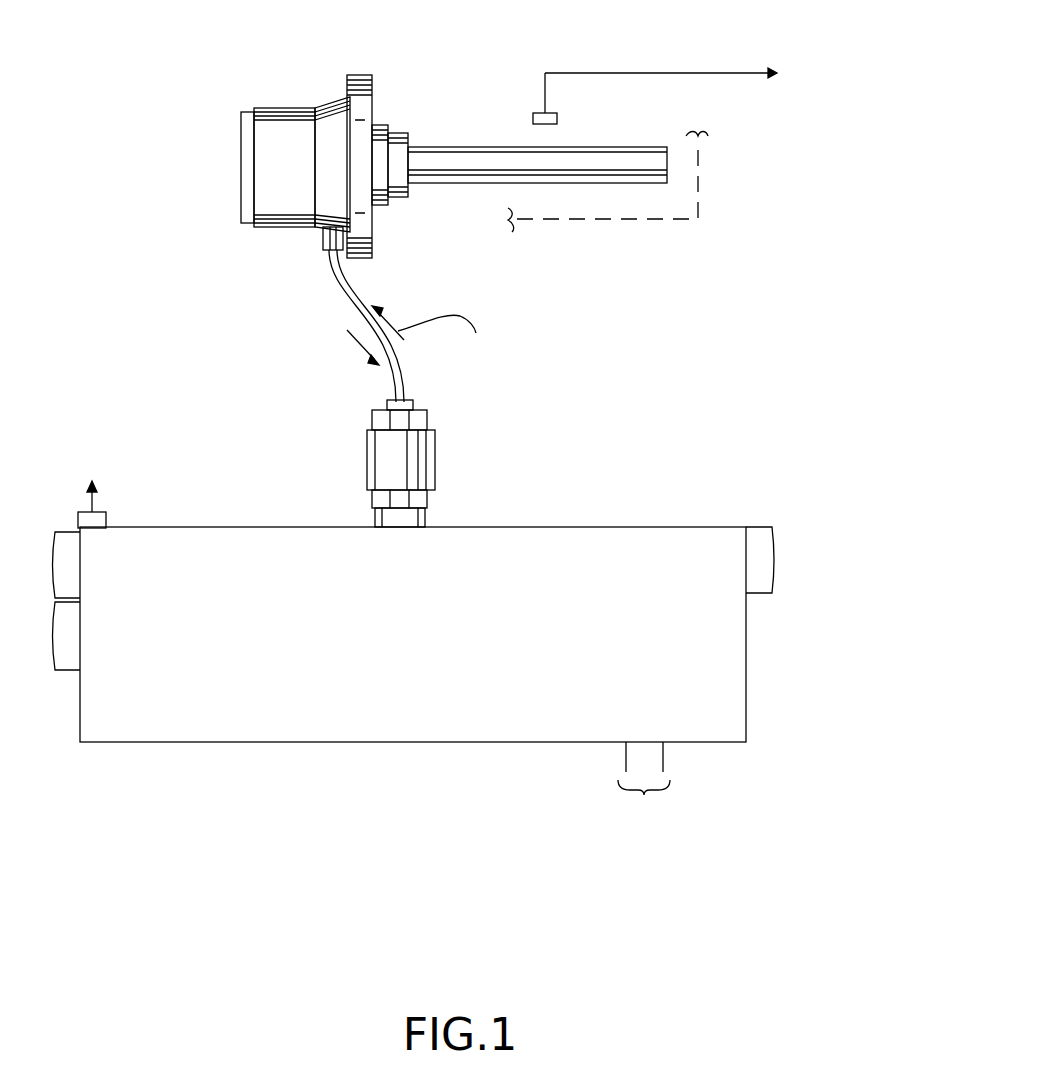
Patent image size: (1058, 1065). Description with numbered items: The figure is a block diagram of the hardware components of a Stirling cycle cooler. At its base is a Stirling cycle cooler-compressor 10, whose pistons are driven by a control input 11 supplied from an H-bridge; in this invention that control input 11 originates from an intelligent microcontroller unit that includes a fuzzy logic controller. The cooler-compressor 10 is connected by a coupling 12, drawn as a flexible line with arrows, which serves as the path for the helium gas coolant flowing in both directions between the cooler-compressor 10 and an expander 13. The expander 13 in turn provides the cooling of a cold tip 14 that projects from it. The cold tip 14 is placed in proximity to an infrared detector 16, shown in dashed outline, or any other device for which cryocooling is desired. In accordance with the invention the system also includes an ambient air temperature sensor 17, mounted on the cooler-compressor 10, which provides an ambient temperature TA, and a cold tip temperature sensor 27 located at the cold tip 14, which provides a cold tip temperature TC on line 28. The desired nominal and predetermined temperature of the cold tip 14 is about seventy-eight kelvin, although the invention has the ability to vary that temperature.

The Stirling cycle cooler-compressor 10 is at (746, 688).
The control input 11 is at (641, 809).
The coupling 12 is at (332, 290).
The expander 13 is at (277, 108).
The cold tip 14 is at (478, 147).
The infrared detector 16 is at (643, 219).
The ambient air temperature sensor 17 is at (78, 518).
The cold tip temperature sensor 27 is at (557, 118).
The line 28 is at (657, 72).